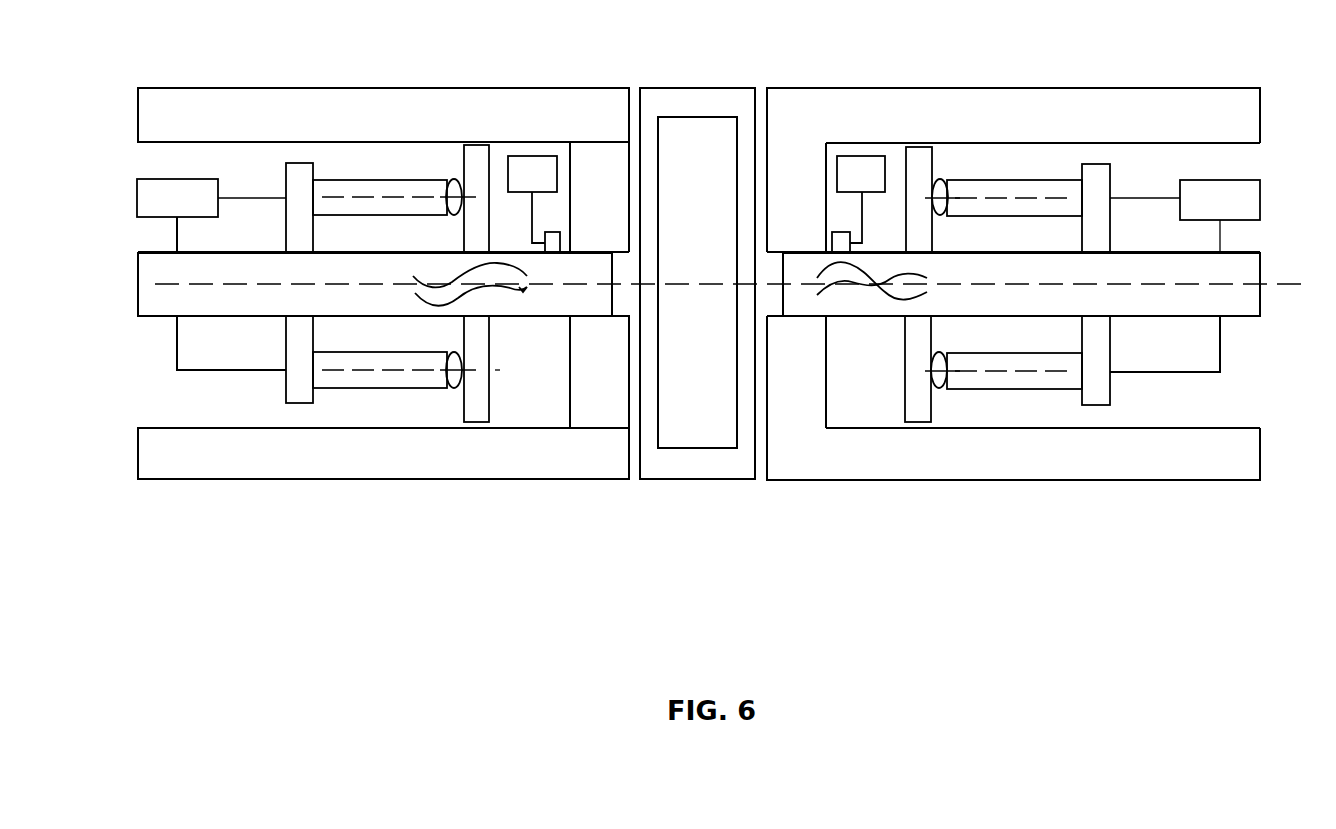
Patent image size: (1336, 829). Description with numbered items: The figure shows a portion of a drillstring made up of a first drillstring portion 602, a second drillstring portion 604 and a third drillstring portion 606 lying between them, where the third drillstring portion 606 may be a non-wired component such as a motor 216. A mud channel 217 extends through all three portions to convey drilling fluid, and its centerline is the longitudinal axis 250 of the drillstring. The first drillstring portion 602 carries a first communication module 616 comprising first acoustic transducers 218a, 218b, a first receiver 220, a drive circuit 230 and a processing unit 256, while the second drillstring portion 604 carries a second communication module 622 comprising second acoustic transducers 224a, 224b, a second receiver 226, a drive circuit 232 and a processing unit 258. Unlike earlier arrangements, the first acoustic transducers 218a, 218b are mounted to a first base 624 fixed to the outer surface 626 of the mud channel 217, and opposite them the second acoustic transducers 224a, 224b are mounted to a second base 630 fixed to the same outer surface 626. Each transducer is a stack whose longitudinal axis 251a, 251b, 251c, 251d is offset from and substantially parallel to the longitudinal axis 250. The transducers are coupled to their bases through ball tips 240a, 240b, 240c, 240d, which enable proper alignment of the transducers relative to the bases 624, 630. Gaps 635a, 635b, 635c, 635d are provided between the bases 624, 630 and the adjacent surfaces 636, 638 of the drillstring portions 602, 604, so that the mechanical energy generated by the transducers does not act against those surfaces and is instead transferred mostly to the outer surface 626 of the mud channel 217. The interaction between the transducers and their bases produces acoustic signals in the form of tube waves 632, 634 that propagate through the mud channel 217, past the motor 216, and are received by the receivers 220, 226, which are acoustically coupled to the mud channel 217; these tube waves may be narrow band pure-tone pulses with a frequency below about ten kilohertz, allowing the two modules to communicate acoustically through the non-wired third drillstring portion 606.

The first drillstring portion 602 is at (333, 473).
The second drillstring portion 604 is at (840, 472).
The third drillstring portion 606 is at (717, 470).
The motor 216 is at (660, 448).
The first communication module 616 is at (357, 78).
The second communication module 622 is at (1052, 70).
The first base 624 is at (478, 406).
The second base 630 is at (920, 405).
The adjacent surface 636 is at (152, 142).
The adjacent surface 638 is at (1235, 145).
The longitudinal axis of the drillstring 250 is at (152, 283).
The outer surface of the mud channel 626 is at (170, 318).
The mud channel 217 is at (137, 298).
The drive circuit 230 is at (182, 182).
The drive circuit 232 is at (1185, 220).
The first acoustic transducer 218a is at (428, 190).
The first acoustic transducer 218b is at (388, 389).
The second acoustic transducer 224a is at (975, 188).
The second acoustic transducer 224b is at (995, 392).
The longitudinal axis of acoustic transducer 251a is at (400, 200).
The longitudinal axis of acoustic transducer 251b is at (390, 358).
The longitudinal axis of acoustic transducer 251c is at (1012, 200).
The longitudinal axis of acoustic transducer 251d is at (1005, 368).
The ball tip 240a is at (462, 208).
The ball tip 240b is at (465, 356).
The ball tip 240c is at (945, 210).
The ball tip 240d is at (930, 362).
The gap 635a is at (477, 145).
The gap 635b is at (480, 422).
The gap 635c is at (918, 147).
The gap 635d is at (918, 422).
The processing unit 256 is at (553, 170).
The processing unit 258 is at (840, 178).
The first receiver 220 is at (560, 242).
The second receiver 226 is at (835, 240).
The tube wave 632 is at (493, 282).
The tube wave 634 is at (873, 276).